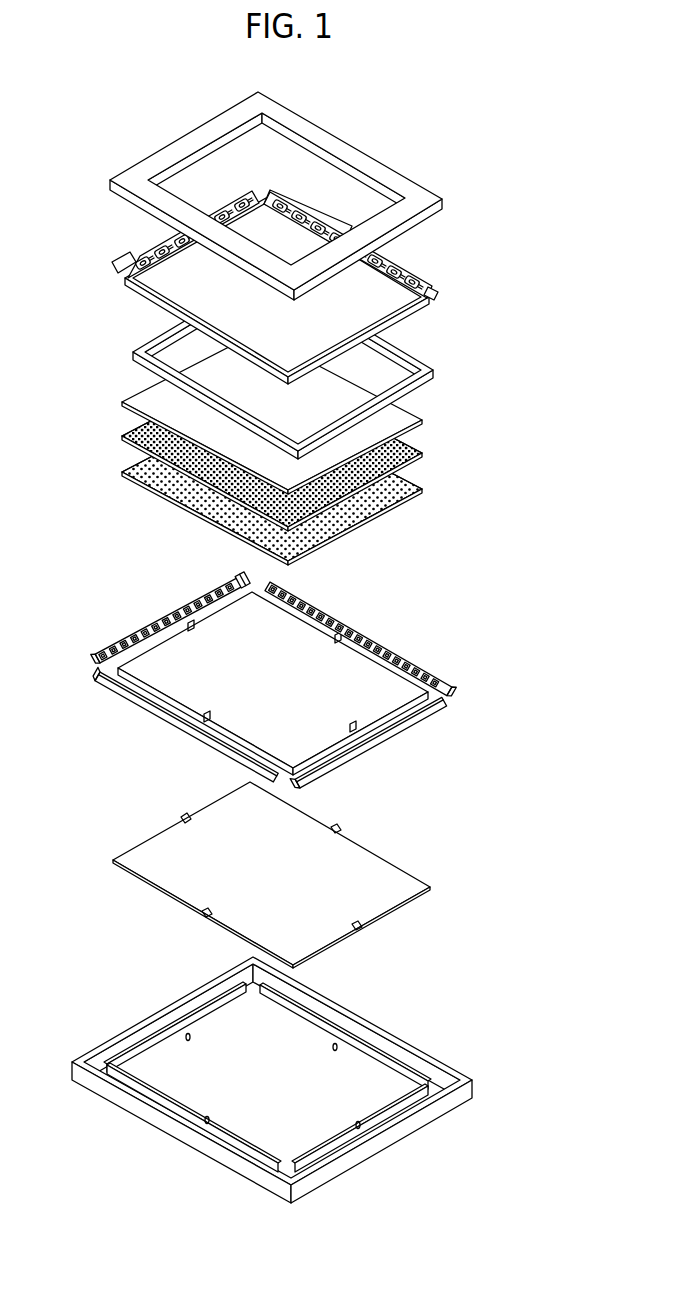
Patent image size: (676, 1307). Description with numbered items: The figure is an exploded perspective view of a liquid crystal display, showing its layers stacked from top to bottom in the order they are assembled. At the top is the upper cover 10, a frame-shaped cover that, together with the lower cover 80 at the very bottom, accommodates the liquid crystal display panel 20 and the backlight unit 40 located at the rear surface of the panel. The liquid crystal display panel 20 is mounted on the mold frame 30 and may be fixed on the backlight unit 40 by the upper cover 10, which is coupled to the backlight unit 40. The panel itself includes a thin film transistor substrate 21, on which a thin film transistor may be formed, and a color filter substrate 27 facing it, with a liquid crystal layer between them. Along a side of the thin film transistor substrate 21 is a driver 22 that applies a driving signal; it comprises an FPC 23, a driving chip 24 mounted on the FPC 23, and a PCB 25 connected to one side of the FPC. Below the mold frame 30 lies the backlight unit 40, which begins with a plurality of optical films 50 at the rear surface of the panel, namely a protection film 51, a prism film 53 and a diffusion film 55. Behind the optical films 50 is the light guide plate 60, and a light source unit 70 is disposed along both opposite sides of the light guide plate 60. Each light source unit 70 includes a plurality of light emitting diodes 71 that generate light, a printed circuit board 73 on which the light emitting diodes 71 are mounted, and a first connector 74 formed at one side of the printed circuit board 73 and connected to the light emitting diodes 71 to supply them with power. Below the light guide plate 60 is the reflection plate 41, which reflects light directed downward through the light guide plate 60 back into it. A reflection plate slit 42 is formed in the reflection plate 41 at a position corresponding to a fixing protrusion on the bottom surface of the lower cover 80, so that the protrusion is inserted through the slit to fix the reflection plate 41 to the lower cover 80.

The upper cover 10 is at (416, 187).
The liquid crystal display panel 20 is at (276, 287).
The thin film transistor substrate 21 is at (428, 298).
The driver 22 is at (189, 243).
The FPC (Flexible Printed Circuit) 23 is at (101, 274).
The driving chip 24 is at (133, 265).
The PCB (Printed Circuit Board) 25 is at (147, 247).
The color filter substrate 27 is at (372, 246).
The mold frame 30 is at (427, 380).
The backlight unit 40 is at (533, 457).
The reflection plate 41 is at (278, 876).
The reflection plate slit 42 is at (362, 913).
The optical films 50 is at (321, 449).
The protection film 51 is at (301, 413).
The prism film 53 is at (424, 456).
The diffusion film 55 is at (424, 491).
The light guide plate 60 is at (392, 688).
The light source unit 70 is at (263, 666).
The light emitting diodes 71 is at (126, 647).
The printed circuit board 73 is at (164, 597).
The first connector 74 is at (248, 576).
The lower cover 80 is at (453, 1067).